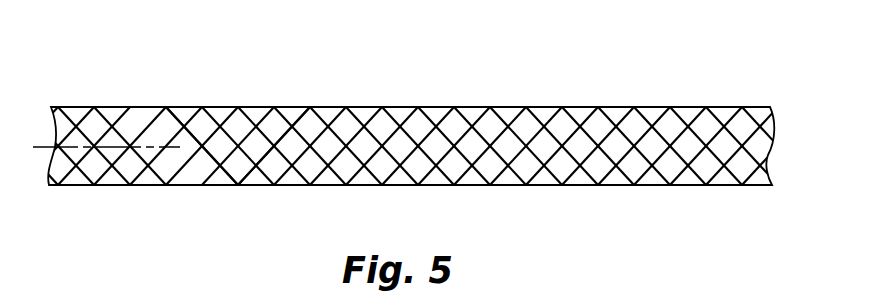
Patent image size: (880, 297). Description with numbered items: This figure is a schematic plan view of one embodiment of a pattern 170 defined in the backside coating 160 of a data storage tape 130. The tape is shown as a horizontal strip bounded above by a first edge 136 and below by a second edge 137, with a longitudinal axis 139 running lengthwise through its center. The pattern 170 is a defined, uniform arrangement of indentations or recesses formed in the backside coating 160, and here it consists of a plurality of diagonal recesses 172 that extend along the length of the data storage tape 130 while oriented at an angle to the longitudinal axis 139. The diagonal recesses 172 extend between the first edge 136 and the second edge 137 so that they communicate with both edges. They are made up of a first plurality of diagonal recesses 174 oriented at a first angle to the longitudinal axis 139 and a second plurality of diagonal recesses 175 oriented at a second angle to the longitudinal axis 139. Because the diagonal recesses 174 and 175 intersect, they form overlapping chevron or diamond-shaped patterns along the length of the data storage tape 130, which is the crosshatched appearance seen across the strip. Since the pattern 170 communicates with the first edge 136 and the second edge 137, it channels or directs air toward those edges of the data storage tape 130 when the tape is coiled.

The data storage tape 130 is at (101, 78).
The pattern 170 is at (748, 59).
The second plurality of diagonal recesses 175 is at (213, 112).
The backside coating 160 is at (257, 112).
The diagonal recesses 172 is at (392, 112).
The first edge 136 is at (463, 107).
The second edge 137 is at (500, 185).
The first plurality of diagonal recesses 174 is at (247, 182).
The longitudinal axis 139 is at (145, 147).